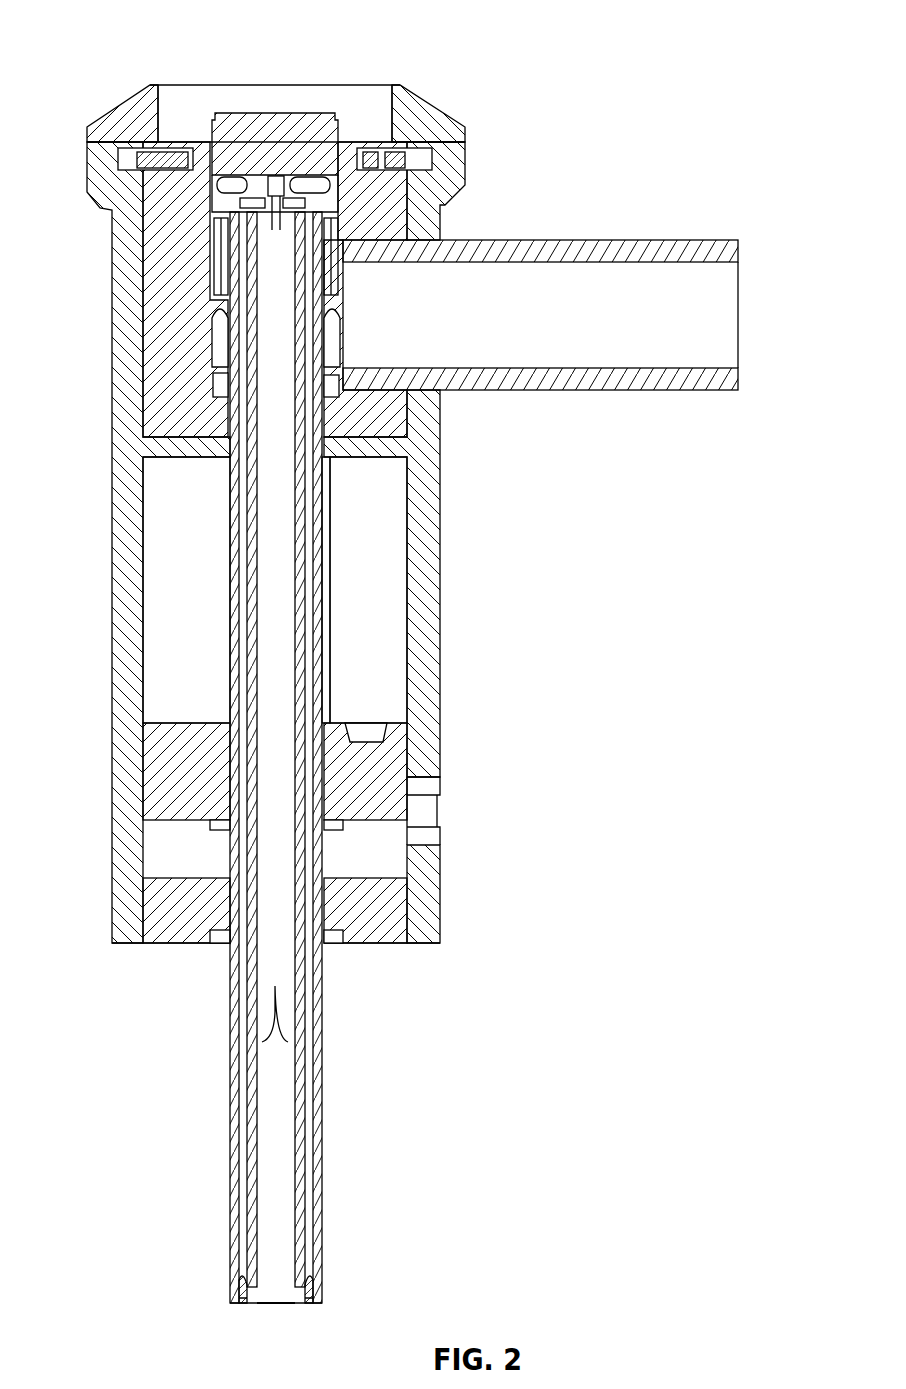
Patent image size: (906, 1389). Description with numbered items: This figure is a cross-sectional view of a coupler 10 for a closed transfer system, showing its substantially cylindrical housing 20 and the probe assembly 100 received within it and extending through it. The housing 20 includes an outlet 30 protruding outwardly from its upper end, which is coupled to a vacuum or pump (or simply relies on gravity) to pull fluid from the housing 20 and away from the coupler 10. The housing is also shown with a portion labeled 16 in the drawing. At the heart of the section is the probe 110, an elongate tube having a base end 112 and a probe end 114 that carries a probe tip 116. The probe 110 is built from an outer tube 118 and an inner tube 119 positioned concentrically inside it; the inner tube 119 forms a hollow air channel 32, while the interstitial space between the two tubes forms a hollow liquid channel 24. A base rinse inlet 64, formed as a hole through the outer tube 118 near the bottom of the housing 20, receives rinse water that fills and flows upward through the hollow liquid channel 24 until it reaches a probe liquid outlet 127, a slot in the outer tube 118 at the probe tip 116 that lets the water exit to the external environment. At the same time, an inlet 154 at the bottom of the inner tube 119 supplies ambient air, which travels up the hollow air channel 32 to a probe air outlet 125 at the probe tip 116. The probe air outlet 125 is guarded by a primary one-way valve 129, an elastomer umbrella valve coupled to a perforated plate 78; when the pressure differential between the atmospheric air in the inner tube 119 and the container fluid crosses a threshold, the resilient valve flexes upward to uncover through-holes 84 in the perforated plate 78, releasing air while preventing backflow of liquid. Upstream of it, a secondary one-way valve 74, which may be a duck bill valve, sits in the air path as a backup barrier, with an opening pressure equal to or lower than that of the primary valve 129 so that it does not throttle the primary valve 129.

The coupler 10 is at (98, 38).
The housing 16 is at (383, 760).
The housing 20 is at (112, 498).
The hollow liquid channel 24 is at (242, 1260).
The outlet 30 is at (727, 287).
The hollow air channel 32 is at (272, 1100).
The base rinse inlet 64 is at (312, 1258).
The secondary one-way valve 74 is at (280, 1010).
The perforated plate 78 is at (262, 196).
The through-holes 84 is at (278, 185).
The probe assembly 100 is at (332, 546).
The probe 110 is at (232, 1030).
The base end 112 is at (335, 1197).
The probe end 114 is at (204, 358).
The probe tip 116 is at (232, 296).
The outer tube 118 is at (232, 1162).
The inner tube 119 is at (297, 1160).
The probe air outlet 125 is at (288, 200).
The probe liquid outlet 127 is at (312, 232).
The primary one-way valve 129 is at (290, 207).
The inlet 154 is at (275, 1290).